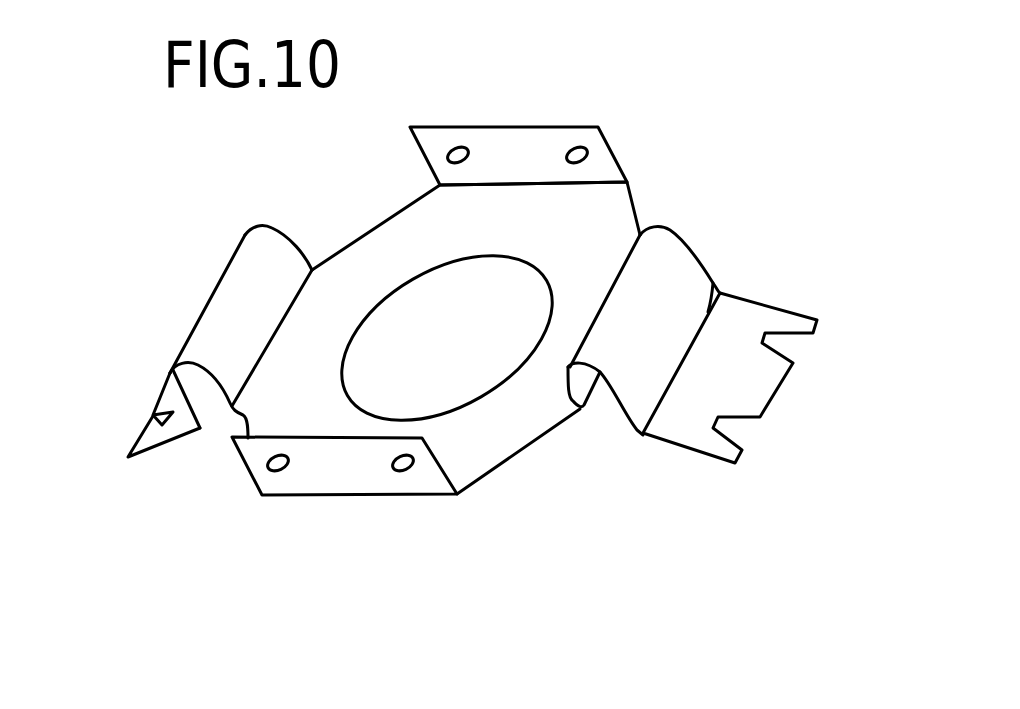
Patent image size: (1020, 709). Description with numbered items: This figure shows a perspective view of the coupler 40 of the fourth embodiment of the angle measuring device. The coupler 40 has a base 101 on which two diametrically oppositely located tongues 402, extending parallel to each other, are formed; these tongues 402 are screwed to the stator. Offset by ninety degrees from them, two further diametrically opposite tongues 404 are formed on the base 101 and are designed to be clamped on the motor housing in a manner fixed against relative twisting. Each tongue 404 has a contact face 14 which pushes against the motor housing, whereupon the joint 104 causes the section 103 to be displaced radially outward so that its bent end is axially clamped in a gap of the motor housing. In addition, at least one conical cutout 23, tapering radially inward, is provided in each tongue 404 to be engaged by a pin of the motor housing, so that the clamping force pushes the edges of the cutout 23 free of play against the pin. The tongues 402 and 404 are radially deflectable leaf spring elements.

The coupler 40 is at (537, 489).
The base 101 is at (387, 263).
The tongues 402 is at (505, 144).
The tongues 404 is at (242, 273).
The joint 104 is at (200, 428).
The contact face 14 is at (702, 455).
The section 103 is at (172, 397).
The cutout 23 is at (152, 417).